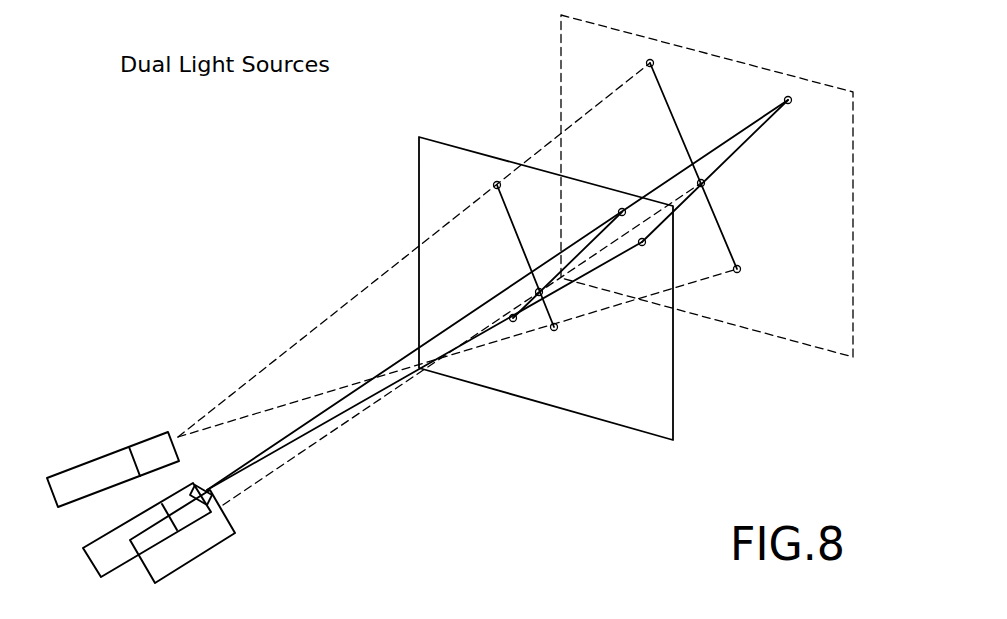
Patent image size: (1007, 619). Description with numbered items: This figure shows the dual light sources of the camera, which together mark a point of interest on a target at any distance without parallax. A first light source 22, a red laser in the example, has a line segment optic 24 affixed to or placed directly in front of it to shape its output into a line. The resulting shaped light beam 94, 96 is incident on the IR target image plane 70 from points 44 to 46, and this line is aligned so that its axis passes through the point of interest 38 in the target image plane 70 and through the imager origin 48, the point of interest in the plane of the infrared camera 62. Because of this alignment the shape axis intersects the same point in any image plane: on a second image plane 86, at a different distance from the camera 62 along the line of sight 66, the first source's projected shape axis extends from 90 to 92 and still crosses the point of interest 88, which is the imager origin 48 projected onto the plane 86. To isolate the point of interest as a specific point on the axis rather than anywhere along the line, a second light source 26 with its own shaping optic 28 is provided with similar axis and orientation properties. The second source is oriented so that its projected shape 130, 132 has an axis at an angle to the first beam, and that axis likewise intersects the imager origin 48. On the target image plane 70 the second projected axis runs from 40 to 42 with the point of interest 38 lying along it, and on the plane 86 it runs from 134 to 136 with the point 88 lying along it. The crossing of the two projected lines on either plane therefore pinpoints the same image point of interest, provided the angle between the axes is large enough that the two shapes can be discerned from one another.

The light source 22 is at (75, 470).
The line segment optic 24 is at (147, 443).
The second light source 26 is at (112, 541).
The shaping optic 28 is at (183, 505).
The point of interest 38 is at (536, 291).
The projected axis endpoint 40 is at (621, 209).
The projected axis endpoint 42 is at (515, 321).
The projected shape endpoint 44 is at (494, 184).
The projected shape endpoint 46 is at (555, 330).
The imager origin 48 is at (222, 507).
The infrared camera 62 is at (208, 547).
The line of sight 66 is at (337, 432).
The target image plane 70 is at (676, 416).
The image plane 86 is at (773, 72).
The point of interest 88 is at (704, 185).
The projected shape axis endpoint 90 is at (653, 65).
The projected shape axis endpoint 92 is at (740, 271).
The shaped light beam 94 is at (232, 392).
The shaped light beam 96 is at (347, 388).
The projected shape 130 is at (258, 458).
The projected shape 132 is at (300, 438).
The projected shape axis endpoint 134 is at (791, 102).
The projected shape axis endpoint 136 is at (645, 244).